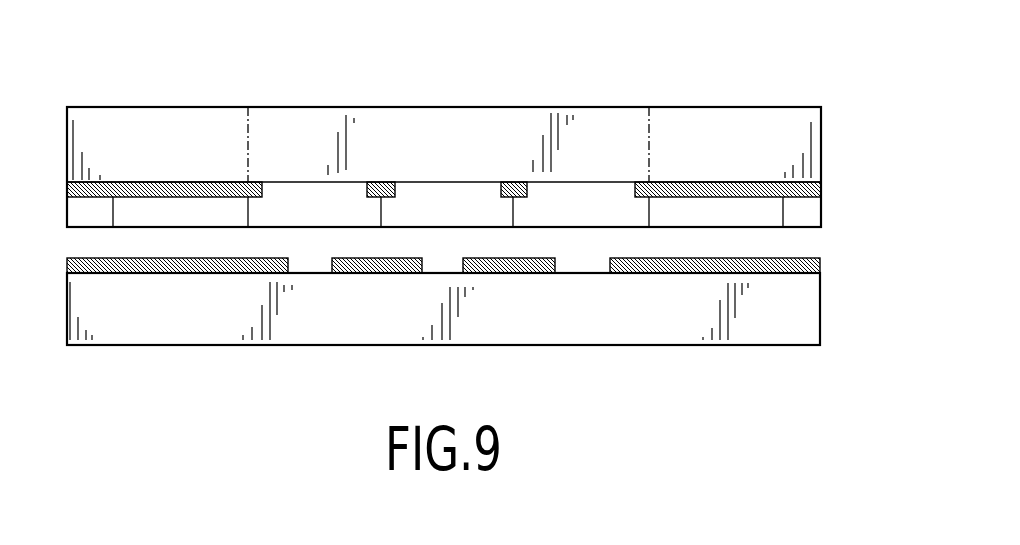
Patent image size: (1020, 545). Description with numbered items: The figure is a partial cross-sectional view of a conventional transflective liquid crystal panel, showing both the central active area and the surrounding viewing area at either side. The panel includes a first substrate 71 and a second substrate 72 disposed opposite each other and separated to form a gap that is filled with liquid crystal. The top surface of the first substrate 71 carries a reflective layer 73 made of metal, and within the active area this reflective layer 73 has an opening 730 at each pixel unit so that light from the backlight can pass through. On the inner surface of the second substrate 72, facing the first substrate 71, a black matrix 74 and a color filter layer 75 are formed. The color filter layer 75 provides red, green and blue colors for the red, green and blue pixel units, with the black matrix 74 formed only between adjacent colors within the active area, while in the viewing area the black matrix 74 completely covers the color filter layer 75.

The first substrate 71 is at (226, 347).
The second substrate 72 is at (484, 143).
The reflective layer 73 is at (480, 293).
The opening 730 is at (610, 274).
The black matrix 74 is at (824, 188).
The color filter layer 75 is at (822, 214).